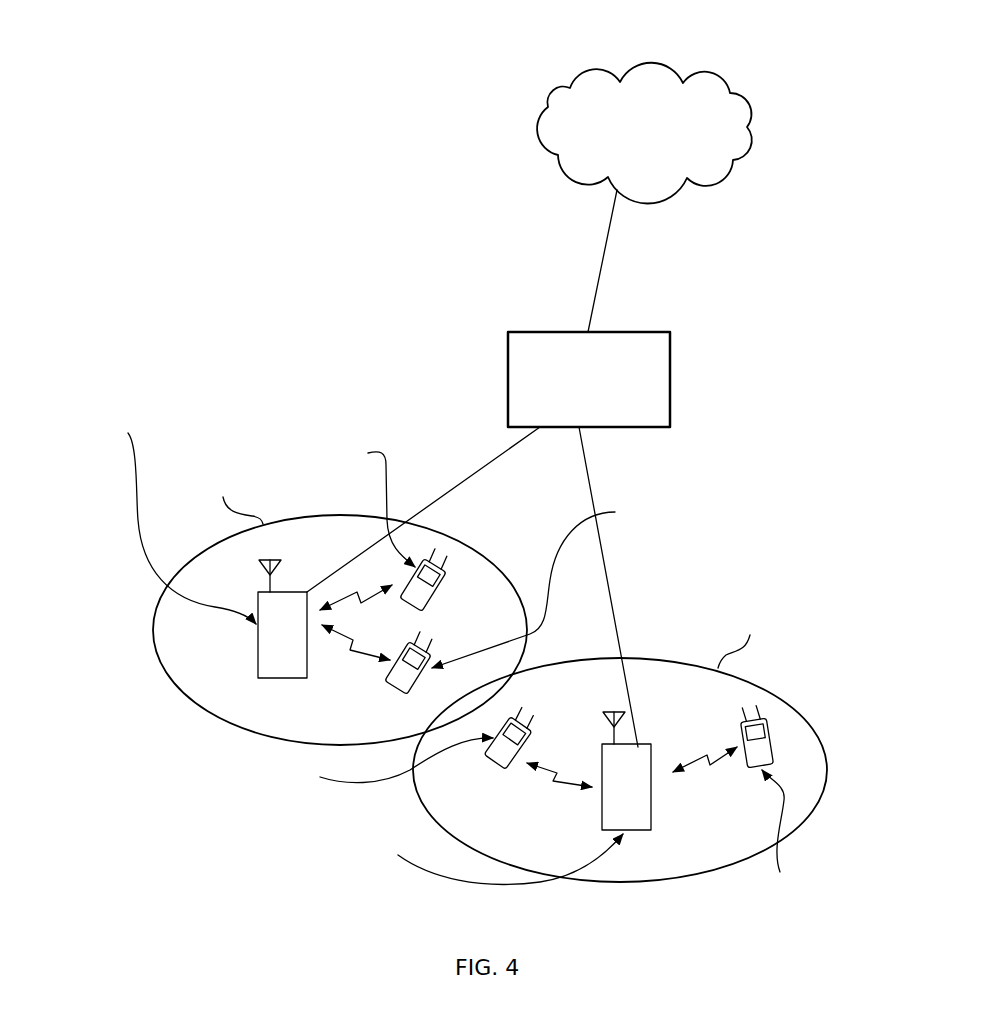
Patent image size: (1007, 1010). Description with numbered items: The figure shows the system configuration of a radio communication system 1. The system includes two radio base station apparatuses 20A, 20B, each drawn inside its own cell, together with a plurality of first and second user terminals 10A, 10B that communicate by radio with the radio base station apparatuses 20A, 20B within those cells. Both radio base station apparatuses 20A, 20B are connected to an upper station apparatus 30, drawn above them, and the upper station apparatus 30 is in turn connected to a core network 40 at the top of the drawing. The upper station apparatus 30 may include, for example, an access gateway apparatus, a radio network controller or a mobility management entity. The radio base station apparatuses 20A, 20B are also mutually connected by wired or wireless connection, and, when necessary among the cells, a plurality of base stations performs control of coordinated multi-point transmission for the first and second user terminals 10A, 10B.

The radio communication system 1 is at (366, 318).
The first user terminal 10A is at (441, 592).
The second user terminal 10B is at (428, 671).
The radio base station apparatus 20A is at (602, 818).
The radio base station apparatus 20B is at (258, 664).
The upper station apparatus 30 is at (670, 367).
The core network 40 is at (712, 76).